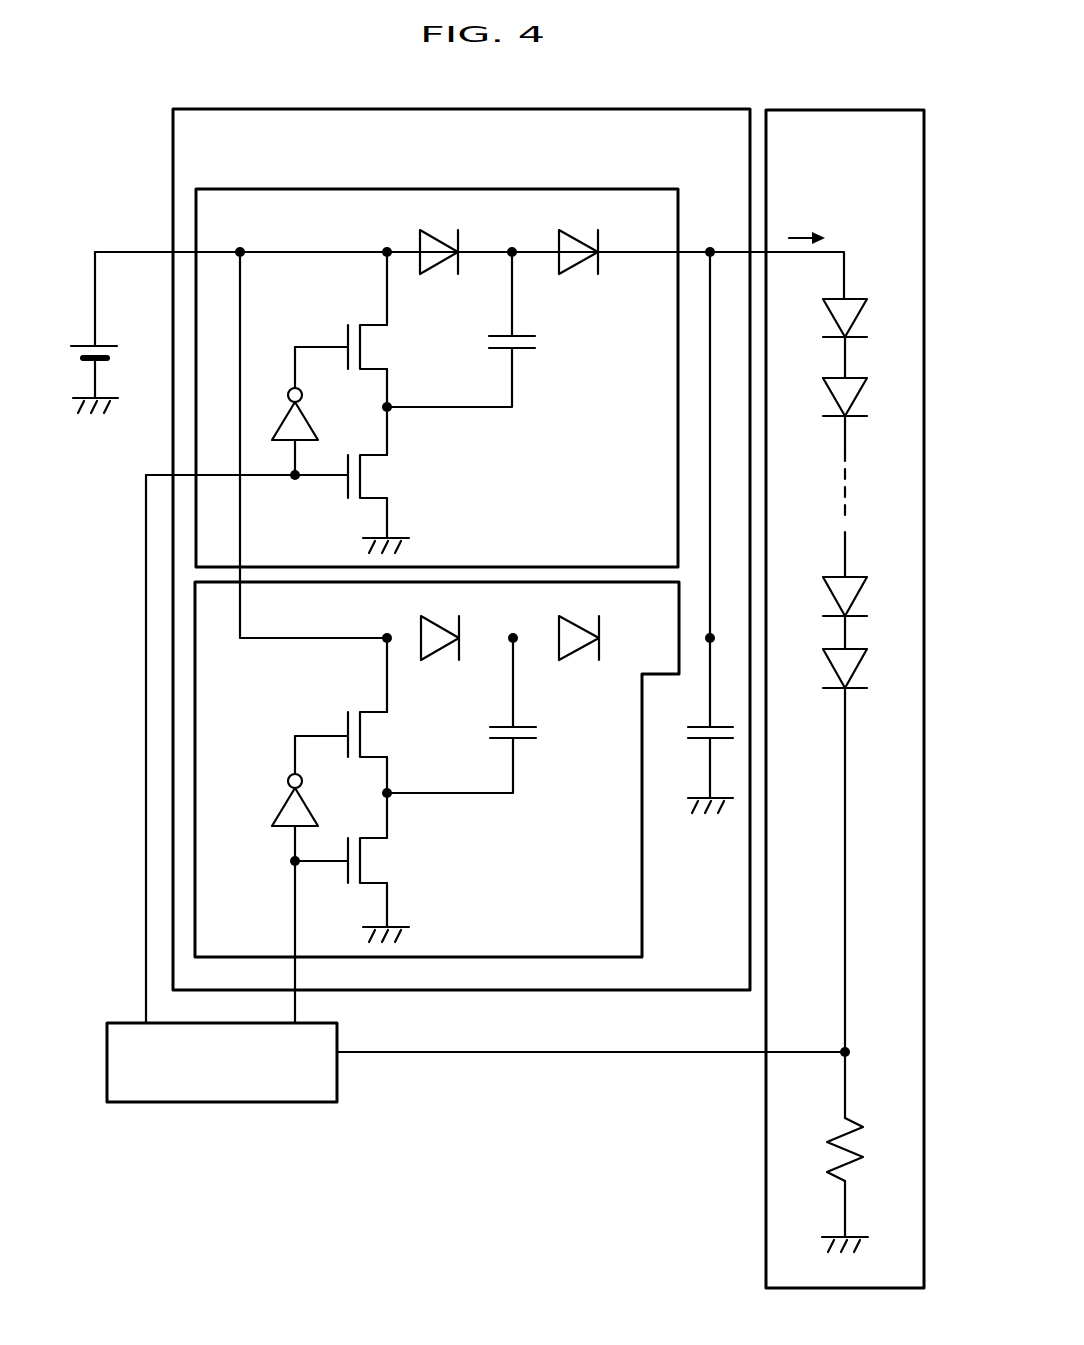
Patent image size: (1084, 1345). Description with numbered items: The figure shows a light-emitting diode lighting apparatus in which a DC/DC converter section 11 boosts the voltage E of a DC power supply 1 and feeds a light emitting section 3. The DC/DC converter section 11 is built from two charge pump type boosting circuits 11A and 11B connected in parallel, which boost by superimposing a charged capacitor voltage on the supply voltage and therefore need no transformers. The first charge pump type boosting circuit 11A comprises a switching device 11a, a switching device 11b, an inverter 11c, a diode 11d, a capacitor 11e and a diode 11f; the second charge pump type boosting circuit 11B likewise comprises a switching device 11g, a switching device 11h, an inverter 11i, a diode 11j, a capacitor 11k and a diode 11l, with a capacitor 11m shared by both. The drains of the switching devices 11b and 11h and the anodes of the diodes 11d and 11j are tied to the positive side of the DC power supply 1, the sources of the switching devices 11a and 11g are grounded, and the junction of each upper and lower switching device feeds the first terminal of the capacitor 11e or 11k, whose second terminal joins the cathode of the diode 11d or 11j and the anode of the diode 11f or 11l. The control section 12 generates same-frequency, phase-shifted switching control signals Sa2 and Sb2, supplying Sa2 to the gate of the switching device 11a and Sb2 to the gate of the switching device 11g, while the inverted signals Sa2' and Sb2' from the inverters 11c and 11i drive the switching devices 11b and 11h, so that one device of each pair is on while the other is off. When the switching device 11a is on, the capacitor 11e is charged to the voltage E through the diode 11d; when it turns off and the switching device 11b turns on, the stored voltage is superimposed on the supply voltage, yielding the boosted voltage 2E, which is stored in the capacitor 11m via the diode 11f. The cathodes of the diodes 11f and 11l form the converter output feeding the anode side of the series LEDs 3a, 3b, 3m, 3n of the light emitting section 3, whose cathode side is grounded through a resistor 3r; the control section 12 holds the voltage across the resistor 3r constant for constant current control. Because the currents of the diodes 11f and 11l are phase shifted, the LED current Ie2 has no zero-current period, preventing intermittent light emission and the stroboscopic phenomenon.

The DC power supply 1 is at (90, 345).
The light emitting section 3 is at (843, 110).
The LED 3a is at (828, 300).
The LED 3b is at (828, 379).
The LED 3m is at (828, 578).
The LED 3n is at (828, 650).
The resistor 3r is at (838, 1128).
The DC/DC converter section 11 is at (308, 109).
The first charge pump type boosting circuit 11A is at (680, 207).
The second charge pump type boosting circuit 11B is at (644, 924).
The switching device 11a is at (388, 476).
The switching device 11b is at (388, 345).
The inverter 11c is at (332, 411).
The diode 11d is at (464, 239).
The capacitor 11e is at (537, 345).
The diode 11f is at (603, 239).
The switching device 11g is at (388, 862).
The switching device 11h is at (388, 737).
The inverter 11i is at (280, 802).
The diode 11j is at (465, 625).
The capacitor 11k is at (527, 727).
The diode 11l is at (604, 625).
The capacitor 11m is at (700, 740).
The control section 12 is at (107, 1054).
The boosted voltage 2E is at (690, 255).
The voltage of the DC power supply E is at (134, 354).
The LED current Ie2 is at (806, 237).
The switching control signal Sa2 is at (112, 749).
The switching control signal Sa2' is at (279, 336).
The switching control signal Sb2 is at (261, 942).
The switching control signal Sb2' is at (262, 734).